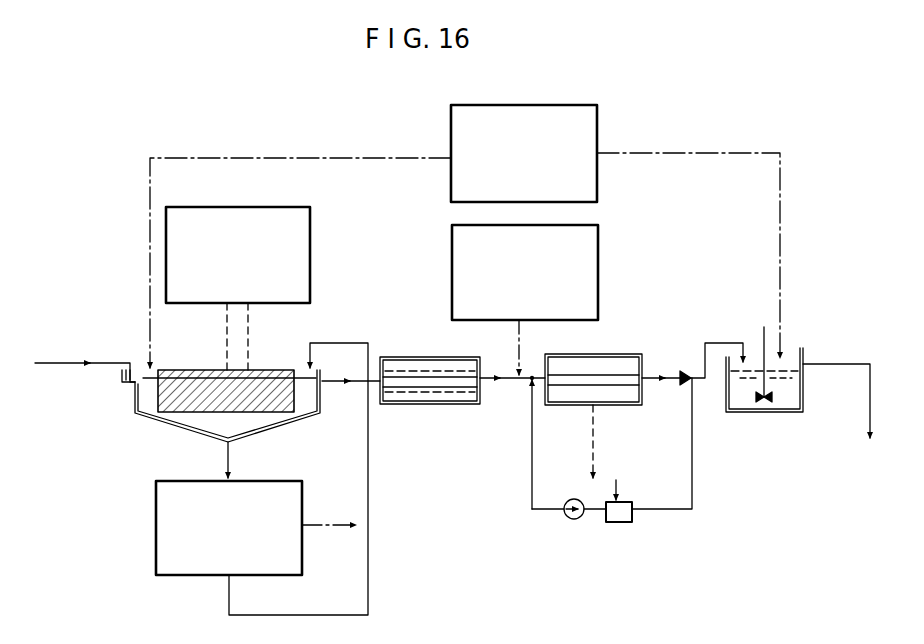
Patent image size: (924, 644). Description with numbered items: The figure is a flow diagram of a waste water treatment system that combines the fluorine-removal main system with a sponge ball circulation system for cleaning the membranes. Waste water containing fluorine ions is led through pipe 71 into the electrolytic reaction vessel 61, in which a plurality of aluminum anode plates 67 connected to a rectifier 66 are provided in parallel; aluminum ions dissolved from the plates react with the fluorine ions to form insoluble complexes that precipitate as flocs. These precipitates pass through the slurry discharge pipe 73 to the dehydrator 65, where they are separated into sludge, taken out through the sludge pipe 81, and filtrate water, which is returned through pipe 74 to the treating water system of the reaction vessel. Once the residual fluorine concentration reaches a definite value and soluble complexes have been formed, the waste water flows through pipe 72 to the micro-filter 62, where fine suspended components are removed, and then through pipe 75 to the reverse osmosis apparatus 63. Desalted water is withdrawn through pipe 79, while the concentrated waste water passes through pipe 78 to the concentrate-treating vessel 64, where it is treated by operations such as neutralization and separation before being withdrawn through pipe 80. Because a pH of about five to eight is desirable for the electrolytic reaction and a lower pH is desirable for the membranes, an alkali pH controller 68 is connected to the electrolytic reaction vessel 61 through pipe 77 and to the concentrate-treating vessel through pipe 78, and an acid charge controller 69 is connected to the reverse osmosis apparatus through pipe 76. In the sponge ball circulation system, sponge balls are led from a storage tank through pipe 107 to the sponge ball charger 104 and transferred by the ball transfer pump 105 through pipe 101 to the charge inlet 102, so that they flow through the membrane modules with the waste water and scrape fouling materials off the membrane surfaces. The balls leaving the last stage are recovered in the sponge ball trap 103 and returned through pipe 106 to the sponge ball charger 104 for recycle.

The electrolytic reaction vessel 61 is at (202, 420).
The micro-filter 62 is at (437, 372).
The reverse osmosis apparatus 63 is at (610, 372).
The concentrate-treating vessel 64 is at (788, 366).
The dehydrator 65 is at (303, 505).
The rectifier 66 is at (311, 276).
The aluminum anode plates 67 is at (268, 369).
The alkali pH controller 68 is at (598, 130).
The acid charge controller 69 is at (599, 268).
The pipe 71 is at (65, 362).
The pipe 72 is at (332, 385).
The slurry discharge pipe 73 is at (231, 450).
The pipe 74 is at (228, 588).
The pipe 75 is at (497, 381).
The pipe 76 is at (519, 340).
The pipe 77 is at (433, 155).
The pipe 78 is at (690, 155).
The pipe 79 is at (595, 425).
The pipe 80 is at (870, 380).
The sludge pipe 81 is at (354, 528).
The pipe 101 is at (531, 500).
The charge inlet 102 is at (530, 382).
The sponge ball trap 103 is at (692, 390).
The sponge ball charger 104 is at (622, 523).
The ball transfer pump 105 is at (574, 520).
The pipe 106 is at (692, 511).
The pipe 107 is at (620, 490).